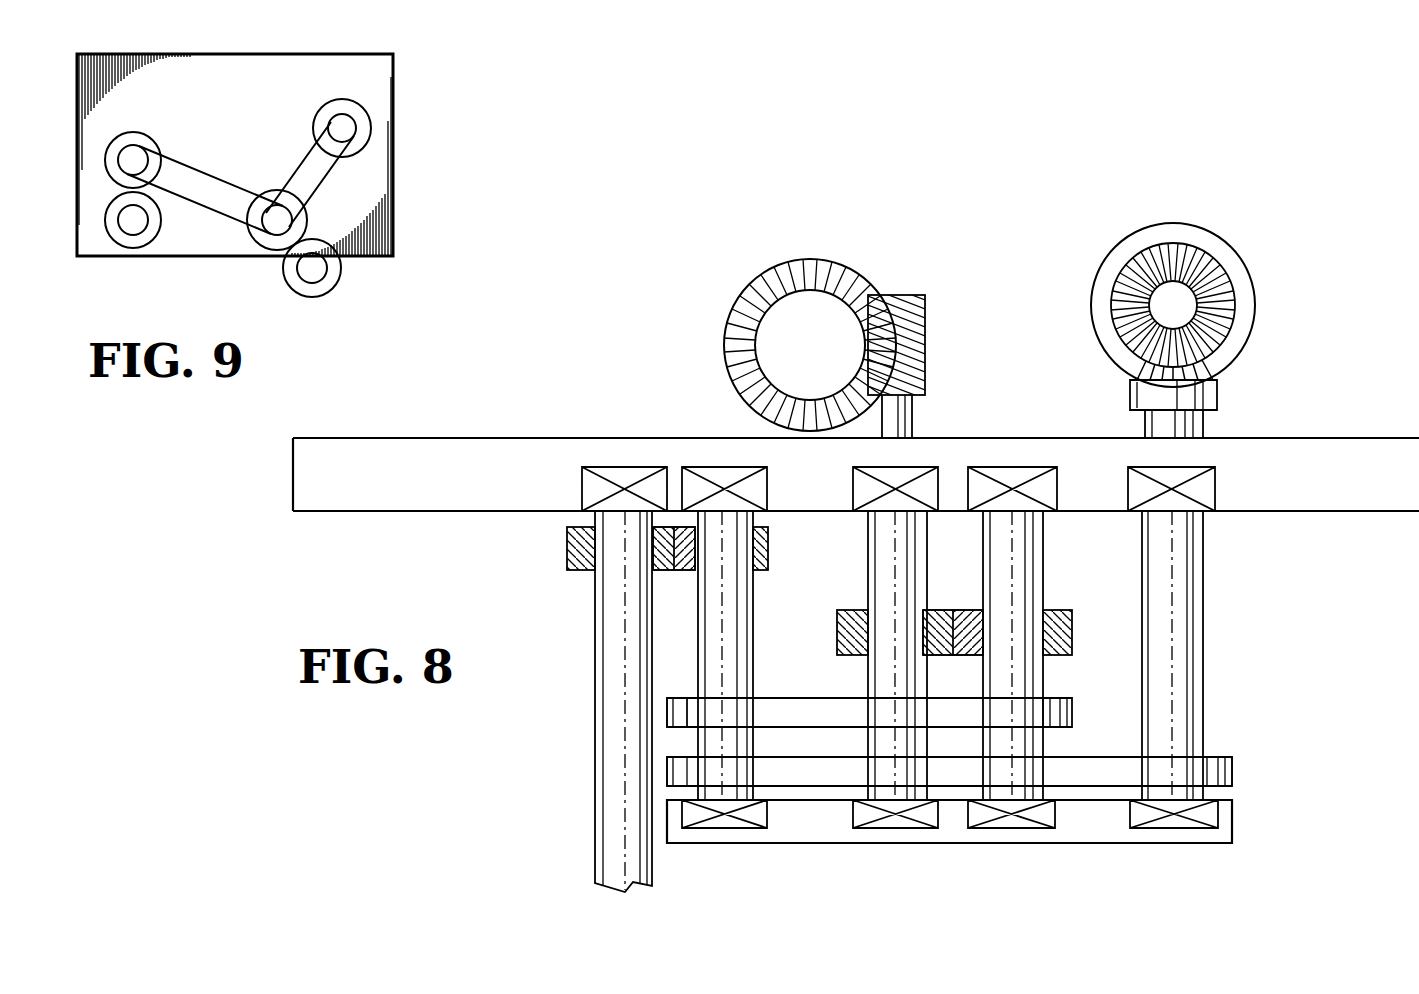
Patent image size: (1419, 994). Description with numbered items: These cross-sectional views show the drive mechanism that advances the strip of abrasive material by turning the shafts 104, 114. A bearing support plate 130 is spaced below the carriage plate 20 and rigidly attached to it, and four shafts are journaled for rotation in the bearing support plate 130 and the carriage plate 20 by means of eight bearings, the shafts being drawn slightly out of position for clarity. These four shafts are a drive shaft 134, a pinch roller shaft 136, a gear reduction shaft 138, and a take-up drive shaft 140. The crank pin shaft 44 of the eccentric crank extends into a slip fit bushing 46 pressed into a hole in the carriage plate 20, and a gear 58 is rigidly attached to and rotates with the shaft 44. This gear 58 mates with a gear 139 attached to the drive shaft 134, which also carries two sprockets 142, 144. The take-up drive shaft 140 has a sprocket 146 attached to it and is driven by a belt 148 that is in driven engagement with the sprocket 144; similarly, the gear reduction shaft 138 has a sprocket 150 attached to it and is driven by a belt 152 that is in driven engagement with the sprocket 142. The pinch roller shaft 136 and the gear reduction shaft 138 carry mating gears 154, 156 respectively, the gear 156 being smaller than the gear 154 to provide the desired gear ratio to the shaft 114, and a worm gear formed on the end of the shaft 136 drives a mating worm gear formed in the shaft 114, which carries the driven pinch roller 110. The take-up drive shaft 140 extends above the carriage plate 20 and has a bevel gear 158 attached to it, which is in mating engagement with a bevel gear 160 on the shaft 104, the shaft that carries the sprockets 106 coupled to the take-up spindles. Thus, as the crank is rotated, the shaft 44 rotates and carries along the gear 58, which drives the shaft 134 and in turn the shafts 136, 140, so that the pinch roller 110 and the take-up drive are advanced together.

In FIG. 8, the carriage plate 20 is at (378, 513).
In FIG. 8, the shaft 44 is at (607, 757).
In FIG. 9, the shaft 44 is at (310, 270).
In FIG. 8, the slip fit bushing 46 is at (580, 491).
In FIG. 8, the gear 58 is at (567, 550).
In FIG. 9, the gear 58 is at (343, 268).
In FIG. 8, the shaft 104 is at (1173, 303).
In FIG. 8, the sprocket 106 is at (1205, 278).
In FIG. 8, the pinch roller 110 is at (790, 325).
In FIG. 8, the shaft 114 is at (805, 320).
In FIG. 8, the bearing support plate 130 is at (1232, 817).
In FIG. 9, the bearing support plate 130 is at (395, 165).
In FIG. 8, the drive shaft 134 is at (722, 588).
In FIG. 9, the drive shaft 134 is at (273, 220).
In FIG. 8, the pinch roller shaft 136 is at (890, 574).
In FIG. 9, the pinch roller shaft 136 is at (132, 220).
In FIG. 8, the gear reduction shaft 138 is at (1007, 568).
In FIG. 9, the gear reduction shaft 138 is at (133, 158).
In FIG. 8, the gear 139 is at (768, 550).
In FIG. 9, the take-up drive shaft 140 is at (342, 127).
In FIG. 8, the sprocket 142 is at (705, 716).
In FIG. 8, the sprocket 144 is at (707, 768).
In FIG. 8, the sprocket 146 is at (1187, 772).
In FIG. 8, the belt 148 is at (1112, 768).
In FIG. 8, the sprocket 150 is at (1027, 712).
In FIG. 8, the belt 152 is at (905, 679).
In FIG. 8, the gear 154 is at (837, 623).
In FIG. 8, the gear 156 is at (1058, 608).
In FIG. 8, the bevel gear 158 is at (927, 322).
In FIG. 8, the bevel gear 160 is at (1232, 291).